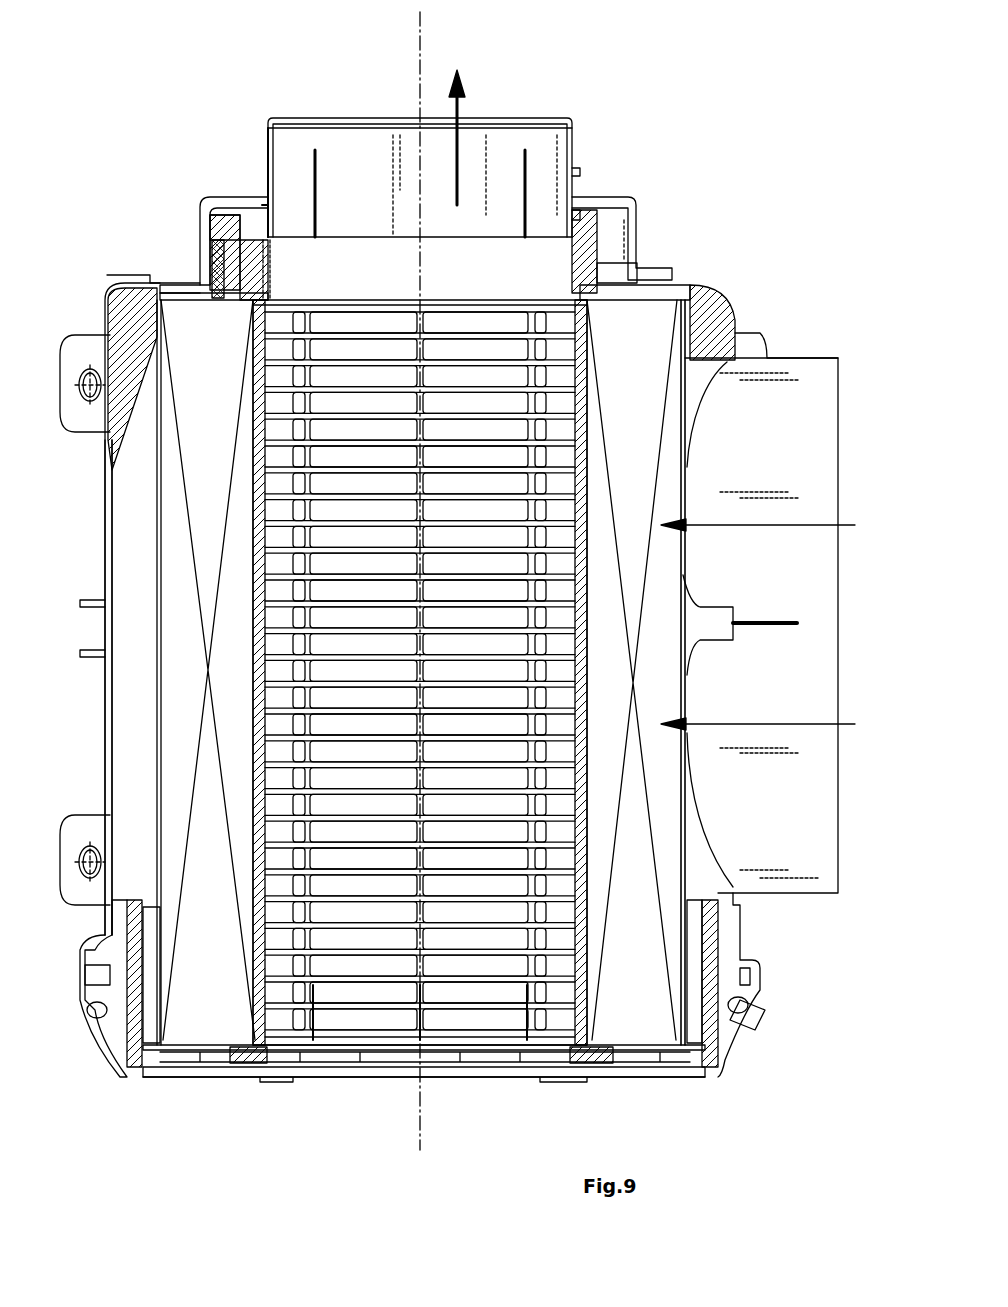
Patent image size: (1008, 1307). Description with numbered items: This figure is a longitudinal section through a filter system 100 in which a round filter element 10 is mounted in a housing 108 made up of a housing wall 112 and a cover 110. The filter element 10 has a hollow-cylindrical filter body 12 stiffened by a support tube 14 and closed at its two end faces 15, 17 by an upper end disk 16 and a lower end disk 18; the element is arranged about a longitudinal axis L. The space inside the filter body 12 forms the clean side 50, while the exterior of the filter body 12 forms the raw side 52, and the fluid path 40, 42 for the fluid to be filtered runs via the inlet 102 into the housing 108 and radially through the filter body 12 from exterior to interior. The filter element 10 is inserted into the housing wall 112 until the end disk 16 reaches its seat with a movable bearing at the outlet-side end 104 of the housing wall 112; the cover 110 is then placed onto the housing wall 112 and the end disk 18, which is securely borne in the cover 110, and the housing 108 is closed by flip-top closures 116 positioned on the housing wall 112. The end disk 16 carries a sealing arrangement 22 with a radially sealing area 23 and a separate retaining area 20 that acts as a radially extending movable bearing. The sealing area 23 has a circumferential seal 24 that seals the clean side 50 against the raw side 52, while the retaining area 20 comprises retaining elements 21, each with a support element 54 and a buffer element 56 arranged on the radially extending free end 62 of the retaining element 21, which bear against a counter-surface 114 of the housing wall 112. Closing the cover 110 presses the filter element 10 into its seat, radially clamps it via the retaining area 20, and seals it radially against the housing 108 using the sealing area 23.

The longitudinal axis L is at (424, 32).
The outlet-side end 104 is at (388, 132).
The fluid path 42 is at (471, 135).
The sealing area 23 is at (281, 188).
The retaining element 21 is at (221, 222).
The sealing arrangement 22 is at (231, 190).
The counter-surface 114 is at (222, 228).
The retaining area 20 is at (188, 248).
The circumferential seal 24 is at (286, 208).
The support element 54 is at (262, 255).
The free end 62 is at (236, 249).
The buffer element 56 is at (246, 290).
The end face 15 is at (652, 253).
The end disk 16 is at (675, 280).
The filter system 100 is at (720, 243).
The filter element 10 is at (630, 350).
The filter body 12 is at (660, 446).
The fluid path 40 is at (810, 525).
The housing 108 is at (100, 586).
The raw side 52 is at (449, 664).
The inlet 102 is at (818, 686).
The housing wall 112 is at (108, 750).
The flip-top closure 116 is at (772, 963).
The end disk 18 is at (252, 1063).
The clean side 50 is at (384, 994).
The support tube 14 is at (580, 1012).
The cover 110 is at (660, 1078).
The end face 17 is at (497, 1088).